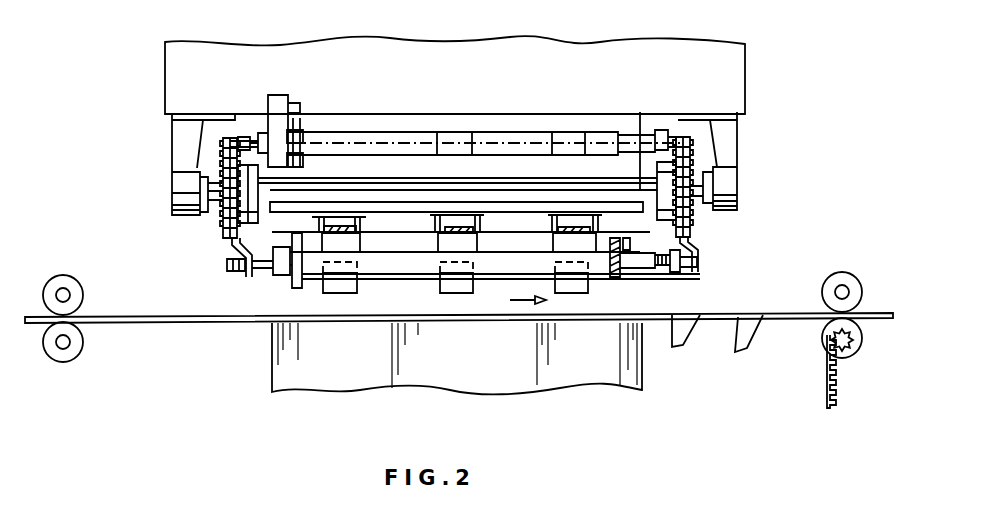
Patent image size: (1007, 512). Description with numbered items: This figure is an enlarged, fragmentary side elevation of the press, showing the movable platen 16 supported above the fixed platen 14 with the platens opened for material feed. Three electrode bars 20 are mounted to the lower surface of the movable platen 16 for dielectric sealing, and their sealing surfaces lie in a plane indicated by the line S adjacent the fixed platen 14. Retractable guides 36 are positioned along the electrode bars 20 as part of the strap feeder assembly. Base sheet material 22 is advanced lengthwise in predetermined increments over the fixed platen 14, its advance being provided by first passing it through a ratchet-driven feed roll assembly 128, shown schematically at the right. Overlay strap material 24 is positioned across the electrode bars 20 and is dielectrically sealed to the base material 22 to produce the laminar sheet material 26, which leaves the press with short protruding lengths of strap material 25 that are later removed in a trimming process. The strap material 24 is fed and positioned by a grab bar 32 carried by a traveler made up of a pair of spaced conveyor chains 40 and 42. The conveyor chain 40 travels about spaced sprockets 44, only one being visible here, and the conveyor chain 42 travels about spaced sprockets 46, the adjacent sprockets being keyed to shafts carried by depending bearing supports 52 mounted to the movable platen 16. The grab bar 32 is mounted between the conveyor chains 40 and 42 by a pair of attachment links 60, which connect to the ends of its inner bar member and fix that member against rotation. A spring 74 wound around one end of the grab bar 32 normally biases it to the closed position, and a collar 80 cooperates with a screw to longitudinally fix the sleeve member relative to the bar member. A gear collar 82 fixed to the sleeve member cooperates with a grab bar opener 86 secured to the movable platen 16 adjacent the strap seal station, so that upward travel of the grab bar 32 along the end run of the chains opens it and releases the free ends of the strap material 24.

The fixed platen 14 is at (285, 350).
The movable platen 16 is at (728, 80).
The electrode bars 20 is at (458, 224).
The base sheet material 22 is at (210, 318).
The overlay strap material 24 is at (440, 279).
The protruding lengths of strap material 25 is at (750, 327).
The laminar sheet material 26 is at (717, 312).
The grab bar 32 is at (457, 130).
The retractable guides 36 is at (433, 233).
The conveyor chain 40 is at (232, 218).
The conveyor chain 42 is at (690, 218).
The sprockets 44 is at (252, 190).
The sprockets 46 is at (667, 177).
The bearing supports 52 is at (185, 143).
The attachment links 60 is at (233, 245).
The spring 74 is at (627, 275).
The collar 80 is at (280, 267).
The gear collar 82 is at (293, 127).
The grab bar opener 86 is at (283, 102).
The ratchet-driven feed roll assembly 128 is at (810, 362).
The plane of sealing surfaces S is at (638, 226).